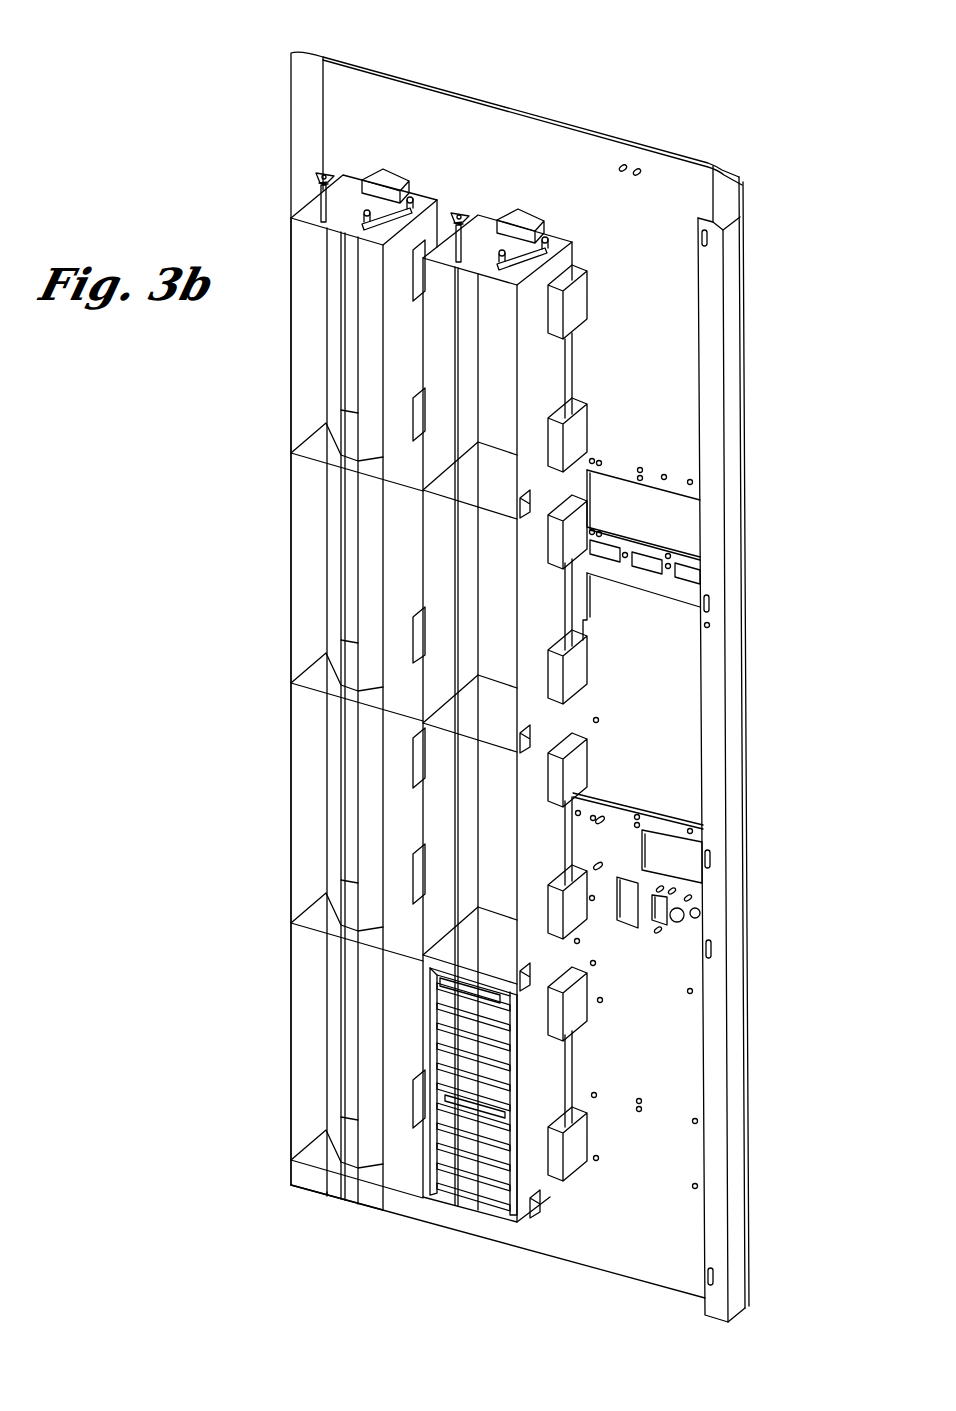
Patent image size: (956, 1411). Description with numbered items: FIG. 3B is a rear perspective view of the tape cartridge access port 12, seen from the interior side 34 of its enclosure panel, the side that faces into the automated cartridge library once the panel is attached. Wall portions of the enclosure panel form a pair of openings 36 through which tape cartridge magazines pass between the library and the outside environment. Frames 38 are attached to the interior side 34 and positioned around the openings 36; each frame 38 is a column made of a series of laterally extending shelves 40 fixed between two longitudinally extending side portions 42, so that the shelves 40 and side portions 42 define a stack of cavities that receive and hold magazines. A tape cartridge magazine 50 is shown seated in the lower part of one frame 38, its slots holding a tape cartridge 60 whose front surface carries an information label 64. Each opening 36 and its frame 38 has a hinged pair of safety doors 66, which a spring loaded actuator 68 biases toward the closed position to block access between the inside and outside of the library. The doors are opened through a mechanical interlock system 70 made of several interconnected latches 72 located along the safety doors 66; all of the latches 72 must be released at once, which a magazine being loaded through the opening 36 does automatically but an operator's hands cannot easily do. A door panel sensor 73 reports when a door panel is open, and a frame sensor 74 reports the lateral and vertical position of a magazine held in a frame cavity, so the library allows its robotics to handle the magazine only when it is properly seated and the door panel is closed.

The tape cartridge access port 12 is at (638, 138).
The interior side 34 is at (652, 242).
The openings 36 is at (497, 330).
The frames 38 is at (352, 1186).
The shelves 40 is at (497, 473).
The side portions 42 is at (540, 412).
The tape cartridge magazine 50 is at (476, 1185).
The tape cartridge 60 is at (500, 1058).
The information label 64 is at (553, 1133).
The safety doors 66 is at (437, 435).
The spring loaded actuator 68 is at (333, 200).
The mechanical interlock system 70 is at (574, 374).
The latches 72 is at (576, 313).
The door panel sensor 73 is at (388, 172).
The frame sensor 74 is at (527, 732).